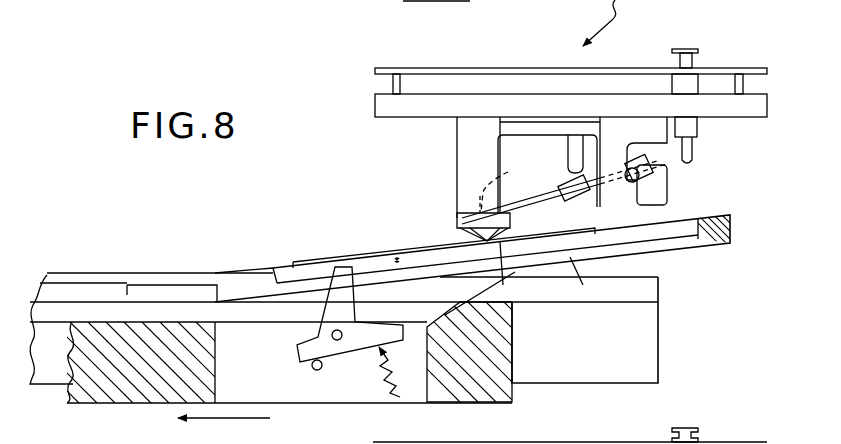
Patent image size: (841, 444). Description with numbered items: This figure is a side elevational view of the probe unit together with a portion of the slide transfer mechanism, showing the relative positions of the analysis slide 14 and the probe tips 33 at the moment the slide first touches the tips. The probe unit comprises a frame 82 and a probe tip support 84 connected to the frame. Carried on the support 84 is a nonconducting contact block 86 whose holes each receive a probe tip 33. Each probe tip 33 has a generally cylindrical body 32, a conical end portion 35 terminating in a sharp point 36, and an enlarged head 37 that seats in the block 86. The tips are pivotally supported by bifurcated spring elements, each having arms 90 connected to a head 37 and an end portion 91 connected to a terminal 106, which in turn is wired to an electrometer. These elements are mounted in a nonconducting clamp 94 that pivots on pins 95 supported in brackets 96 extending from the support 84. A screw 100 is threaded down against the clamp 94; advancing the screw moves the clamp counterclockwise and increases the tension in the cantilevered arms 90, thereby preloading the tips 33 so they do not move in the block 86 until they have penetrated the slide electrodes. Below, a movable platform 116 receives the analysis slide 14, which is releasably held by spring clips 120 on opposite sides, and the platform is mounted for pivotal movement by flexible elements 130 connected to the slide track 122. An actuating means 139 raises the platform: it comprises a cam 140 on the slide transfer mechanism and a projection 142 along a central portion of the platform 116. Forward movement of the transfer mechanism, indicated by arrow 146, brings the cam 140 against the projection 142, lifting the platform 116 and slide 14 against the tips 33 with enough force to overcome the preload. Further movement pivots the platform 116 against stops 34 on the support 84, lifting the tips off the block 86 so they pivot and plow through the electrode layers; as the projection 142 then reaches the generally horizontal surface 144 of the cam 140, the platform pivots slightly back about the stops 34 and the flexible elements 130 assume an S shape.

The frame 82 is at (493, 102).
The terminal 106 is at (697, 48).
The probe tip support 84 is at (452, 161).
The screw 100 is at (570, 151).
The enlarged head 37 is at (509, 189).
The arm 90 is at (558, 194).
The contact block 86 is at (512, 217).
The probe tip 33 is at (456, 214).
The stop 34 is at (464, 238).
The clamp 94 is at (690, 158).
The end portion 91 is at (678, 151).
The bracket 96 is at (668, 180).
The pin 95 is at (668, 203).
The movable platform 116 is at (686, 256).
The cylindrical body 32 is at (600, 254).
The sharp point 36 is at (492, 246).
The conical end portion 35 is at (580, 280).
The projection 142 is at (505, 292).
The cam 140 is at (446, 314).
The generally horizontal surface 144 is at (490, 298).
The actuating means 139 is at (524, 357).
The arrow 146 is at (262, 418).
The slide track 122 is at (118, 283).
The spring clip 120 is at (297, 262).
The analysis slide 14 is at (372, 258).
The flexible element 130 is at (236, 285).